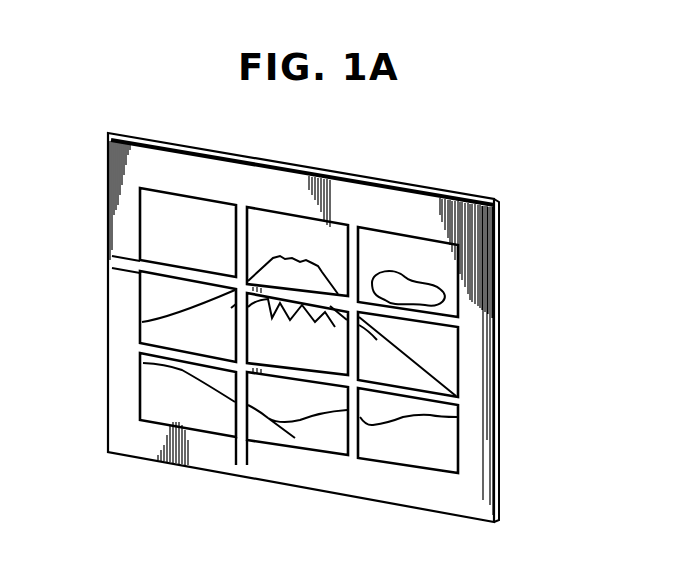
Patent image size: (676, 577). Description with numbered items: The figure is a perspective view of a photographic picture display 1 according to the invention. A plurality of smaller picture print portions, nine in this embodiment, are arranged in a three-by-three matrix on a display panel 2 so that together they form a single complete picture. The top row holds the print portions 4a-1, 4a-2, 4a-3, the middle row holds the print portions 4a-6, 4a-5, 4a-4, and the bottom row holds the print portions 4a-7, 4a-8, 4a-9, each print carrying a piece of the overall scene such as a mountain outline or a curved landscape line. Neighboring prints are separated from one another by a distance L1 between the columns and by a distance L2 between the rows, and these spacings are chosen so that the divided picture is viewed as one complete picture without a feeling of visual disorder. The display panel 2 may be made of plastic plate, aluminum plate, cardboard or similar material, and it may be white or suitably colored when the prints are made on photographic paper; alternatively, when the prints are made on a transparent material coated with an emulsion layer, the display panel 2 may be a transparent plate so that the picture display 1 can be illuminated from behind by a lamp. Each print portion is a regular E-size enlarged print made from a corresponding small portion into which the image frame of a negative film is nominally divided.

The photographic picture display 1 is at (392, 158).
The display panel 2 is at (475, 210).
The picture print portion 4a-1 is at (180, 206).
The picture print portion 4a-2 is at (287, 226).
The picture print portion 4a-3 is at (405, 246).
The picture print portion 4a-4 is at (450, 357).
The picture print portion 4a-5 is at (326, 356).
The picture print portion 4a-6 is at (150, 332).
The picture print portion 4a-7 is at (173, 419).
The picture print portion 4a-8 is at (317, 443).
The picture print portion 4a-9 is at (415, 460).
The column separation distance L1 is at (122, 230).
The row separation distance L2 is at (213, 455).